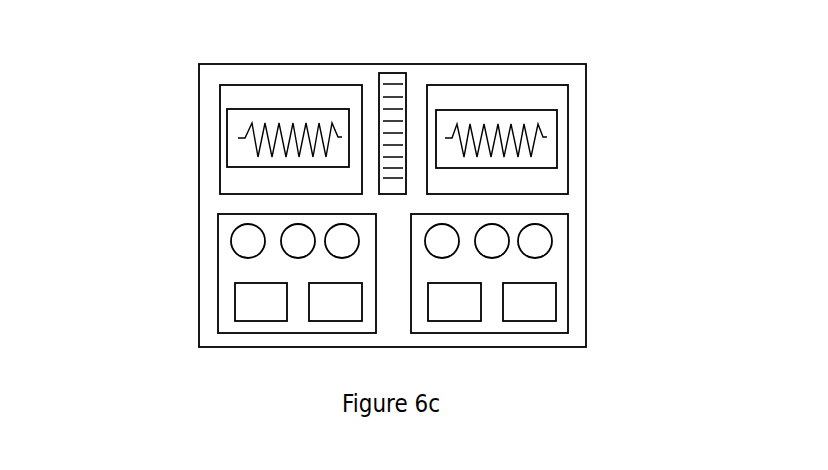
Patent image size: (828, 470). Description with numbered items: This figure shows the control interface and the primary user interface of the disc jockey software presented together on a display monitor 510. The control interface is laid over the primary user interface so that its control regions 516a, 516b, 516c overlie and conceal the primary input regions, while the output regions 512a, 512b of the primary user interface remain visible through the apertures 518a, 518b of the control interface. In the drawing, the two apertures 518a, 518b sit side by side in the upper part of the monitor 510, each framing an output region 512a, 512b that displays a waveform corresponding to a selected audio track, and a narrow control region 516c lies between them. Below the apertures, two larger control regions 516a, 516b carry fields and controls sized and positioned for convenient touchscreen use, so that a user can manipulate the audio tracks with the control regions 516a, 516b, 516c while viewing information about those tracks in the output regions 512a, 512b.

The display monitor 510 is at (586, 315).
The output region 512a is at (233, 149).
The output region 512b is at (550, 148).
The control region 516a is at (226, 288).
The control region 516b is at (549, 265).
The control region 516c is at (392, 73).
The aperture 518a is at (233, 101).
The aperture 518b is at (553, 100).